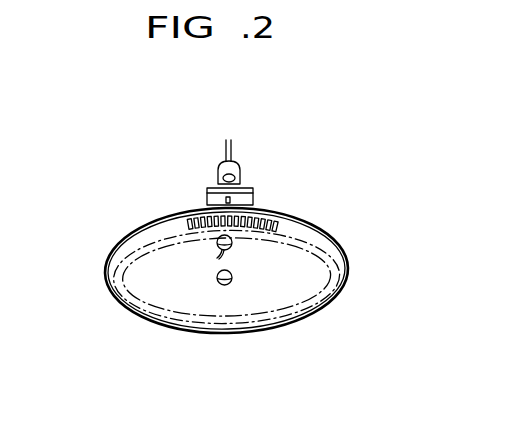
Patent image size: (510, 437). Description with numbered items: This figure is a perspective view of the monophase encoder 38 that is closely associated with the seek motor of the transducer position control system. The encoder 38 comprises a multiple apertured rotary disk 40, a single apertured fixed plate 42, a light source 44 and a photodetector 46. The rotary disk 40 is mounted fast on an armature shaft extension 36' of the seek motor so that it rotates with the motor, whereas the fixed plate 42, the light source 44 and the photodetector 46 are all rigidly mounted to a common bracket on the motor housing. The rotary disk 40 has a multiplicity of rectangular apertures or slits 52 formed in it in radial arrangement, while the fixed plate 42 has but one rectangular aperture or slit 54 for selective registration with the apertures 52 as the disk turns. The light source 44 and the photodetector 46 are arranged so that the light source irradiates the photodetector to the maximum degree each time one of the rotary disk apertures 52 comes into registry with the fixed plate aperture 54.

The monophase encoder 38 is at (349, 200).
The multiple apertured rotary disk 40 is at (338, 240).
The single apertured fixed plate 42 is at (207, 197).
The light source 44 is at (217, 241).
The photodetector 46 is at (218, 171).
The rectangular apertures or slits 52 is at (186, 224).
The rectangular aperture or slit 54 is at (230, 200).
The armature shaft extension 36' is at (229, 321).